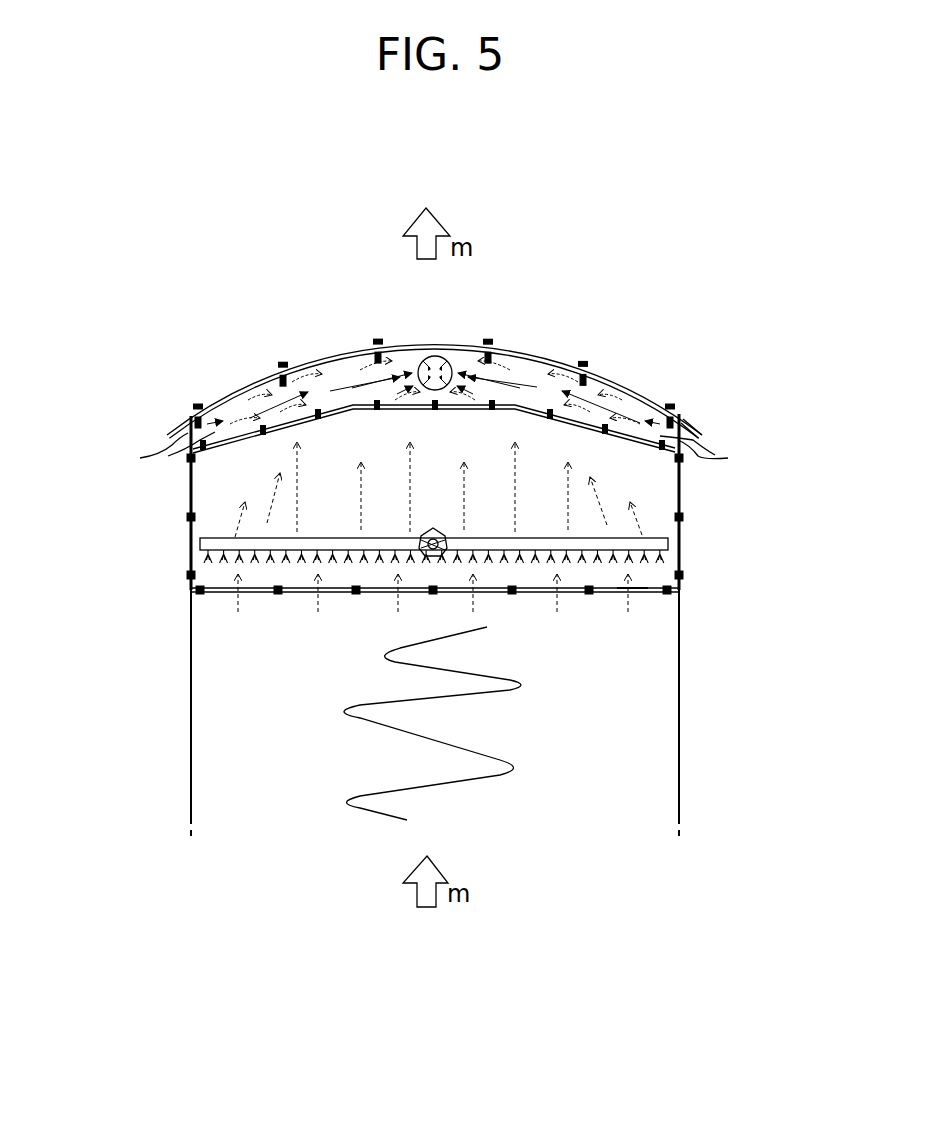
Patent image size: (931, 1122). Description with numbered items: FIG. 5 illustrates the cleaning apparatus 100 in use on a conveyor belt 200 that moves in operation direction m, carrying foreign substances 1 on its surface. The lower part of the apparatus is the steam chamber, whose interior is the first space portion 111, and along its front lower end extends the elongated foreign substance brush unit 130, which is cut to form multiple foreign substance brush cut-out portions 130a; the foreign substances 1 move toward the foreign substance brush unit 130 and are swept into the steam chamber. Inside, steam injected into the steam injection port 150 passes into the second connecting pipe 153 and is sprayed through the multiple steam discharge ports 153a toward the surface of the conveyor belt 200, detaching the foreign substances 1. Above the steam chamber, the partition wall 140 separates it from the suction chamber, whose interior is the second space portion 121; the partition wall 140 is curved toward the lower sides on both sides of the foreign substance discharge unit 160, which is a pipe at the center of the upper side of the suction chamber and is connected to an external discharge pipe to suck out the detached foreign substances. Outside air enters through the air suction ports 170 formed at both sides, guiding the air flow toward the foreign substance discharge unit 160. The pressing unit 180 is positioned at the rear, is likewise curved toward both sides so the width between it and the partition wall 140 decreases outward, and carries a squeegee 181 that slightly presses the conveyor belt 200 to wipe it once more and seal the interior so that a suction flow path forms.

The cleaning apparatus 100 is at (232, 390).
The first space portion 111 is at (643, 518).
The second space portion 121 is at (522, 375).
The foreign substance brush unit 130 is at (435, 638).
The foreign substance brush cut-out portions 130a is at (617, 592).
The partition wall 140 is at (340, 413).
The steam injection port 150 is at (433, 530).
The second connecting pipe 153 is at (218, 546).
The steam discharge ports 153a is at (316, 552).
The foreign substance discharge unit 160 is at (436, 356).
The air suction port 170 is at (438, 451).
The pressing unit 180 is at (606, 376).
The squeegee 181 is at (697, 425).
The conveyor belt 200 is at (662, 725).
The foreign substances 1 is at (362, 720).